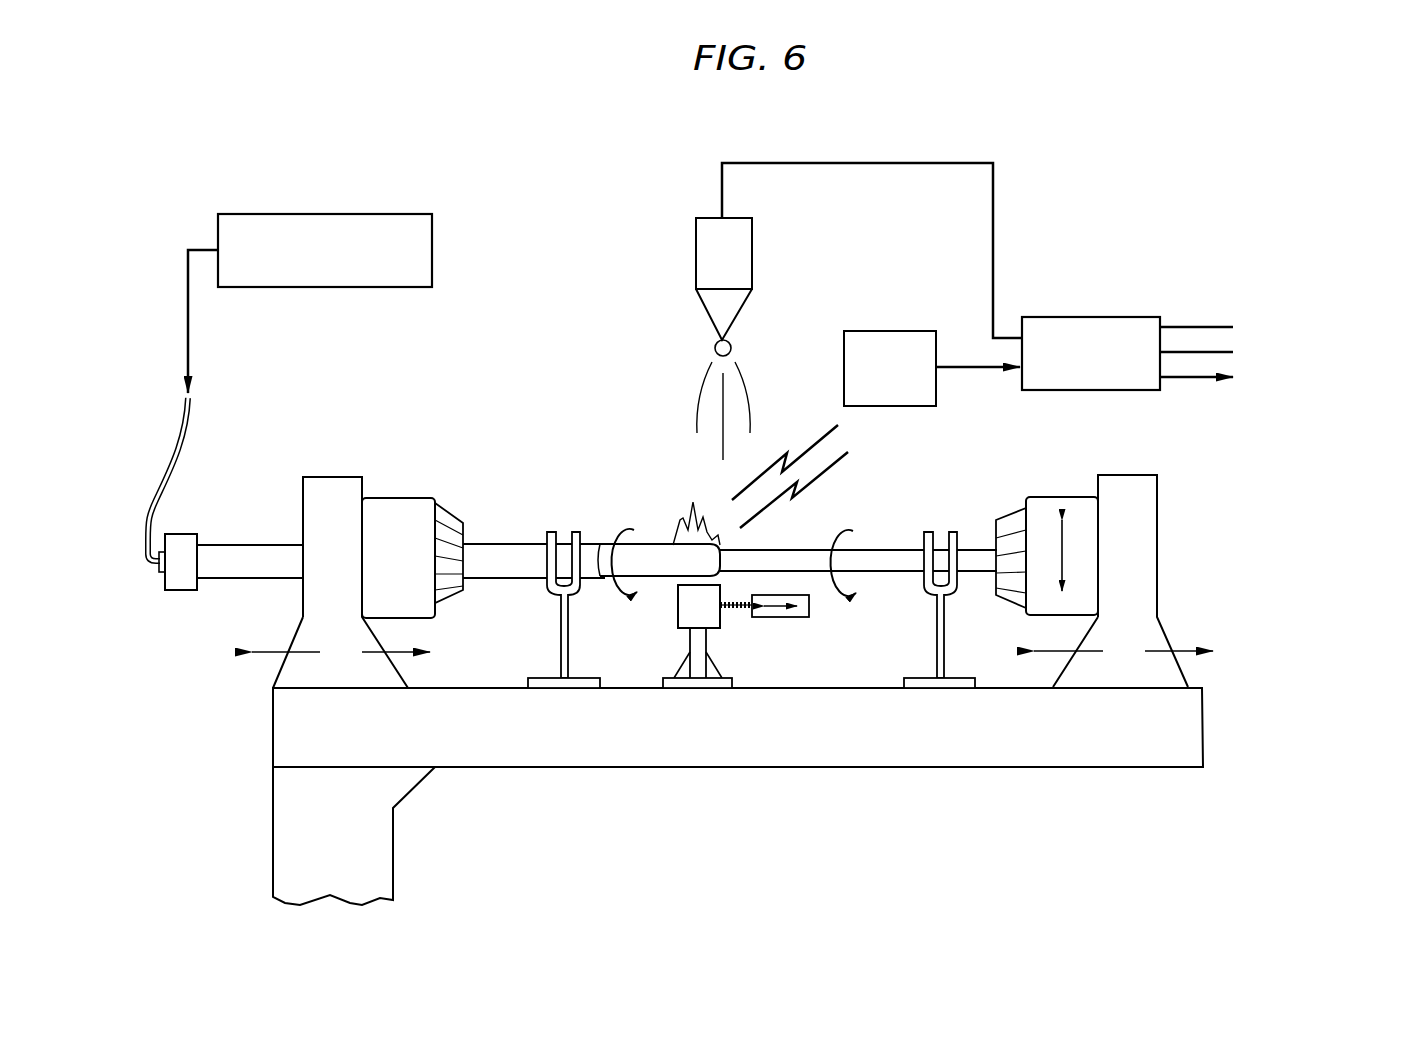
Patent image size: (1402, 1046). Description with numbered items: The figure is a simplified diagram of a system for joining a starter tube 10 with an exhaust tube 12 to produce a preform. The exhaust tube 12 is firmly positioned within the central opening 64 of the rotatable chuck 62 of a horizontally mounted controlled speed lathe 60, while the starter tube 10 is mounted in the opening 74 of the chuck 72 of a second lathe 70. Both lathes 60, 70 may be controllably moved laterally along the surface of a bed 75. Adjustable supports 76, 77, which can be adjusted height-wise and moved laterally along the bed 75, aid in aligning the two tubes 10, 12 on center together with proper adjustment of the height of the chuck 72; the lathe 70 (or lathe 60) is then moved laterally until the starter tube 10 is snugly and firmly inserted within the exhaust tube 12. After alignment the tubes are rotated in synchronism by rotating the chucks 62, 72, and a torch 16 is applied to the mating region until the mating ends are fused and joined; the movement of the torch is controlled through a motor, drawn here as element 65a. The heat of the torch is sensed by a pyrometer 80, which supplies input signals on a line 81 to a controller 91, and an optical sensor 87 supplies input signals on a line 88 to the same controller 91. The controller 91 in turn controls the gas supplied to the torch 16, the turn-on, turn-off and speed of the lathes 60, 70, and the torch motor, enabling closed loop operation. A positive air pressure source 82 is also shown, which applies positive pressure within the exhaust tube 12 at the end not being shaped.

The starter tube 10 is at (890, 572).
The exhaust tube 12 is at (500, 580).
The torch 16 is at (678, 605).
The lathe 60 is at (194, 740).
The chuck 62 is at (393, 498).
The central opening 64 is at (455, 505).
The torch drive 65a is at (783, 617).
The lathe 70 is at (1313, 727).
The chuck 72 is at (1062, 547).
The opening 74 is at (1010, 510).
The bed 75 is at (685, 740).
The adjustable support 76 is at (937, 658).
The adjustable support 77 is at (560, 658).
The pyrometer 80 is at (745, 318).
The line 81 is at (722, 182).
The positive air pressure source 82 is at (341, 214).
The optical sensor 87 is at (897, 331).
The line 88 is at (965, 358).
The controller 91 is at (1108, 318).